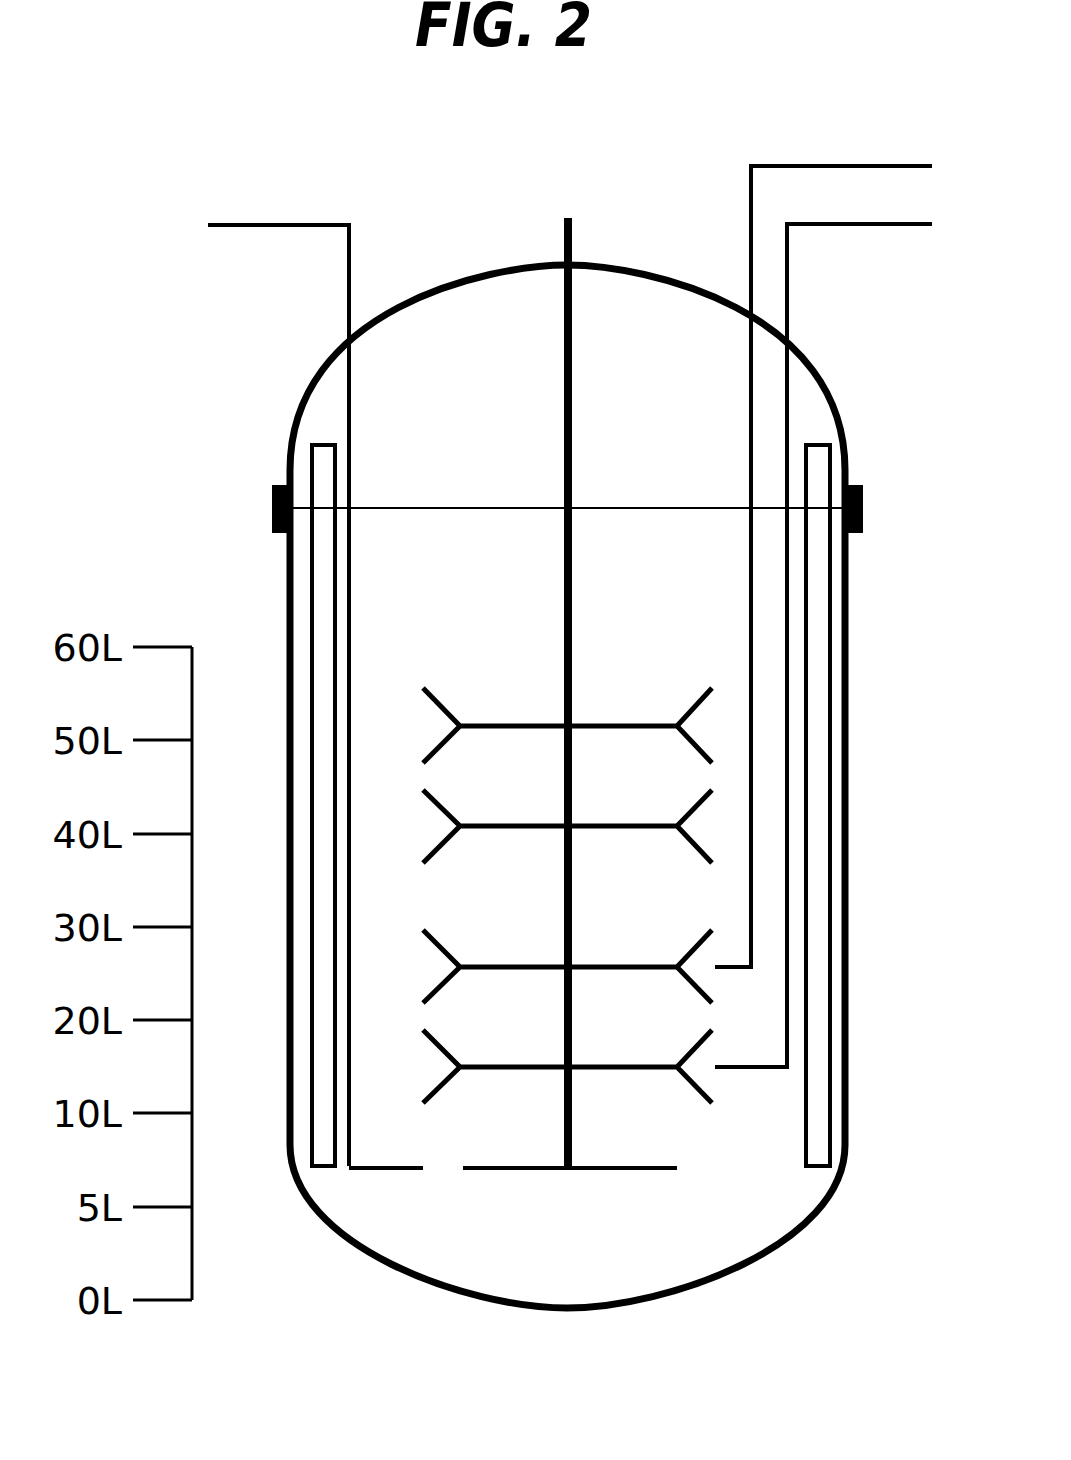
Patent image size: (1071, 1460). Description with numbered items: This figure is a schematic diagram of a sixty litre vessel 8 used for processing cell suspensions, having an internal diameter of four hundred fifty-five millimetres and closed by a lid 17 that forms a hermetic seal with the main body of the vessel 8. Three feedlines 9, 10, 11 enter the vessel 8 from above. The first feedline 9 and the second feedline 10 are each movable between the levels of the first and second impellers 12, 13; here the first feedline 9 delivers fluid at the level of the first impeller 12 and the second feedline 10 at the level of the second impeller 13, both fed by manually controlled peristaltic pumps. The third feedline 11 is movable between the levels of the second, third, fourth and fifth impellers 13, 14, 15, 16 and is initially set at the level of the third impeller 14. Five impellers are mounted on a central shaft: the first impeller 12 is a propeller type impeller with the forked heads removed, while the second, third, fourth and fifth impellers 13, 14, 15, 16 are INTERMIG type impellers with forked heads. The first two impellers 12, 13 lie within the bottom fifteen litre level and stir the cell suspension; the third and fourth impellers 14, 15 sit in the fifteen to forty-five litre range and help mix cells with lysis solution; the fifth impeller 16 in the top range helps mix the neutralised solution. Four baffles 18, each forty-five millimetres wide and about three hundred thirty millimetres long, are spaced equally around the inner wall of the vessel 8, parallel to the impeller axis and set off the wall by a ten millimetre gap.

The vessel 8 is at (285, 605).
The first feedline 9 is at (283, 224).
The second feedline 10 is at (887, 228).
The third feedline 11 is at (831, 164).
The first impeller 12 is at (684, 1164).
The second impeller 13 is at (442, 1073).
The third impeller 14 is at (442, 968).
The fourth impeller 15 is at (440, 829).
The fifth impeller 16 is at (440, 729).
The lid 17 is at (486, 268).
The baffle 18 is at (830, 648).